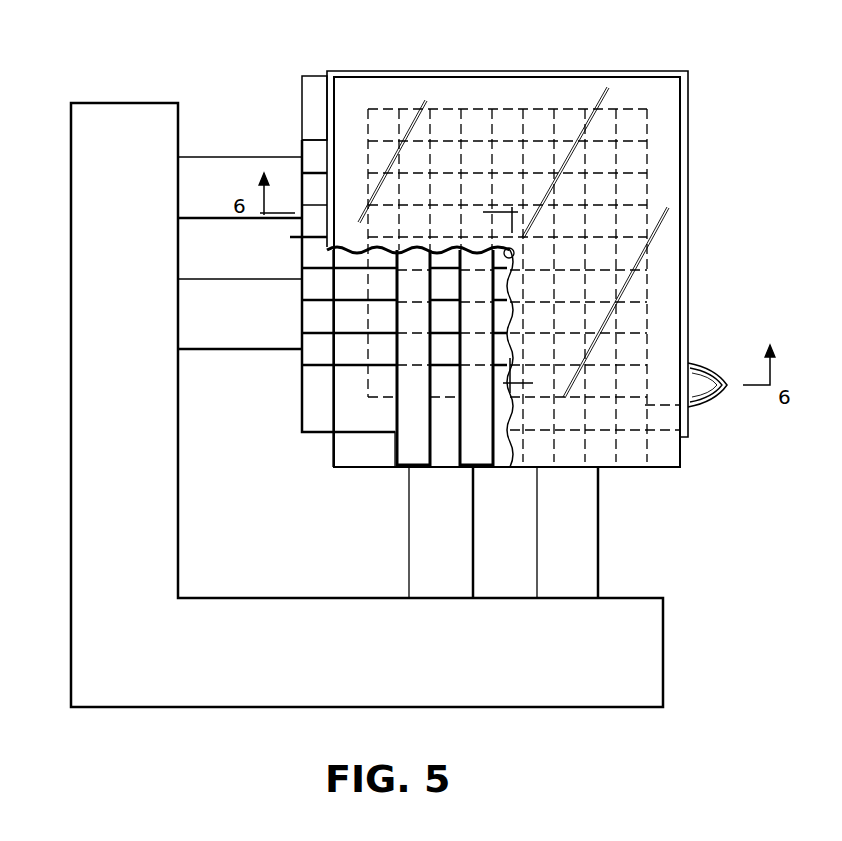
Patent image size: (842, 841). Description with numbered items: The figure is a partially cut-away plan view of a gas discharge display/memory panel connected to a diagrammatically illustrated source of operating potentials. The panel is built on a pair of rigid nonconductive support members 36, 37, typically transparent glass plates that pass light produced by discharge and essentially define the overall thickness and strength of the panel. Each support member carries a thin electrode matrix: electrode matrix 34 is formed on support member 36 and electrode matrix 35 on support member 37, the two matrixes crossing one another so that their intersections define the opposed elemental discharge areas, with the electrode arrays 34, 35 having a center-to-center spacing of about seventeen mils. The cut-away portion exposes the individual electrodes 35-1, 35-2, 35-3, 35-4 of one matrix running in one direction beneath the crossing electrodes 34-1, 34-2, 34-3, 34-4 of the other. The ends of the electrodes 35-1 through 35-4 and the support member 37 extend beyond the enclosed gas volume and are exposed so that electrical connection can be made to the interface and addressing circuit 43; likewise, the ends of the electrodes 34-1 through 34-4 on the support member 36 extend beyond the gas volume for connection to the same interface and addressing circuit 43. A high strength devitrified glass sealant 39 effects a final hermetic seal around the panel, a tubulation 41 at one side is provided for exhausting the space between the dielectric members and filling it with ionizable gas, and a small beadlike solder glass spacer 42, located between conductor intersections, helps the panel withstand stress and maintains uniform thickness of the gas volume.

The electrode matrix 34 is at (475, 424).
The electrode 34-1 is at (398, 468).
The electrode 34-2 is at (468, 453).
The electrode 34-3 is at (533, 455).
The electrode 34-4 is at (602, 460).
The electrode matrix 35 is at (362, 249).
The electrode 35-1 is at (305, 155).
The electrode 35-2 is at (307, 225).
The electrode 35-3 is at (308, 290).
The electrode 35-4 is at (308, 356).
The nonconductive support member 36 is at (673, 453).
The nonconductive support member 37 is at (313, 85).
The devitrified glass sealant 39 is at (327, 75).
The tubulation 41 is at (697, 367).
The solder glass spacer 42 is at (514, 254).
The interface and addressing circuit 43 is at (85, 322).